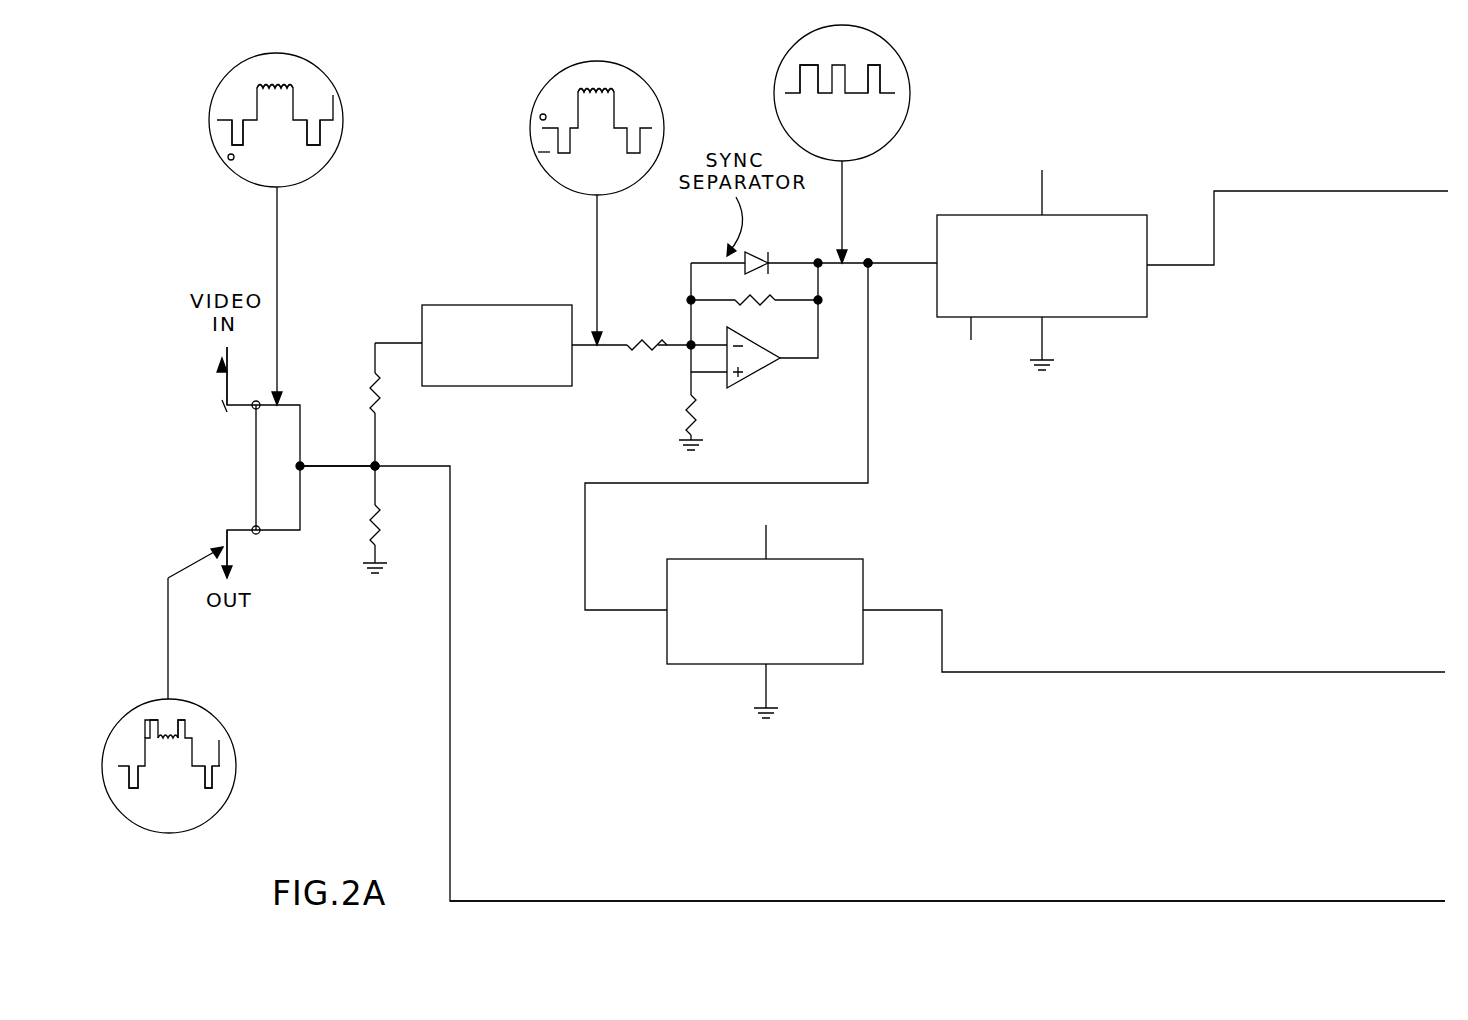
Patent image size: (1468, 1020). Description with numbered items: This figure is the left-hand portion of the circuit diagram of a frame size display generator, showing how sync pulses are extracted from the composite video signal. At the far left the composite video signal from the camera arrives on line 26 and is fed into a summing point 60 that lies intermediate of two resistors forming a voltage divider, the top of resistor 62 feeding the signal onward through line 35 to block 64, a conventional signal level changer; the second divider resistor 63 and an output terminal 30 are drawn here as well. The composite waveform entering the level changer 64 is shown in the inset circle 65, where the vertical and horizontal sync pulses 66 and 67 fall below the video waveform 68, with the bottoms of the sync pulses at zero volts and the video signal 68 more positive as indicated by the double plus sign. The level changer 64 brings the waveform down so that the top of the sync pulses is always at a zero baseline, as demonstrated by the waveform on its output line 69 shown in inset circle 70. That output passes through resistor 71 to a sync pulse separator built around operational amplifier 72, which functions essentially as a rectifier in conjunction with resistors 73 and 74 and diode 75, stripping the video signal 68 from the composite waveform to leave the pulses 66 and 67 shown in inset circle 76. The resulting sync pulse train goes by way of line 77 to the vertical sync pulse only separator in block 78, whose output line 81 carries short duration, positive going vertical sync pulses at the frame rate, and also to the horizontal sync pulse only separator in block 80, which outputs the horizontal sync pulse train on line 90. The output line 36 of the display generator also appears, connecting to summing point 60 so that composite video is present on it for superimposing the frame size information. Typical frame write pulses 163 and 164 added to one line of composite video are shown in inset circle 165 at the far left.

The line 26 is at (227, 405).
The video output terminal 30 is at (228, 556).
The video signal line 35 is at (330, 466).
The output line 36 is at (1360, 901).
The summing point 60 is at (378, 470).
The resistor 62 is at (375, 380).
The resistor to ground 63 is at (375, 525).
The level changer 64 is at (495, 305).
The inset circle 65 is at (343, 117).
The vertical sync pulse 66 is at (234, 147).
The horizontal sync pulse 67 is at (320, 147).
The video waveform 68 is at (276, 88).
The line 69 is at (572, 347).
The inset circle 70 is at (663, 98).
The resistor 71 is at (641, 342).
The operational amplifier 72 is at (748, 386).
The resistor 73 is at (690, 412).
The resistor 74 is at (758, 302).
The diode 75 is at (758, 253).
The inset circle 76 is at (909, 82).
The line 77 is at (870, 266).
The vertical sync pulse separator 78 is at (1109, 318).
The horizontal sync pulse separator 80 is at (836, 559).
The output line 81 is at (1330, 191).
The line 90 is at (905, 610).
The frame write pulse 163 is at (150, 716).
The frame write pulse 164 is at (188, 716).
The inset circle 165 is at (165, 834).